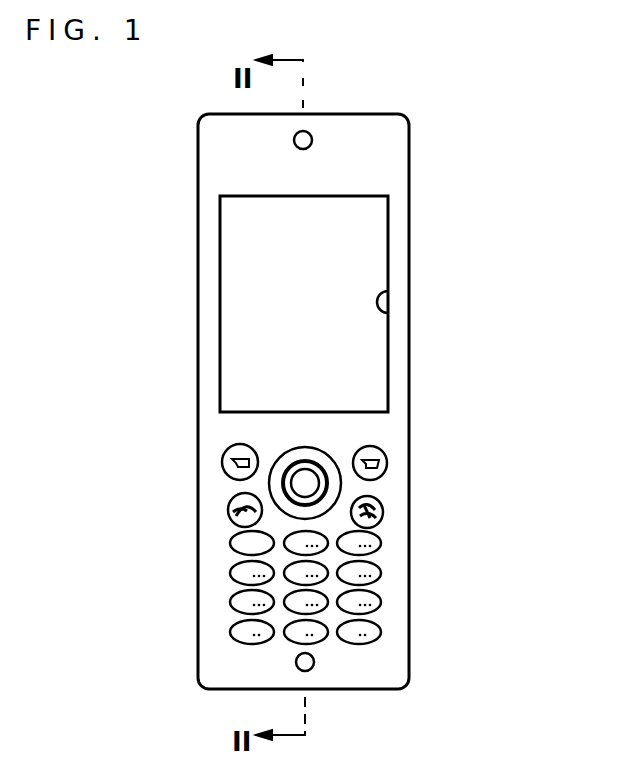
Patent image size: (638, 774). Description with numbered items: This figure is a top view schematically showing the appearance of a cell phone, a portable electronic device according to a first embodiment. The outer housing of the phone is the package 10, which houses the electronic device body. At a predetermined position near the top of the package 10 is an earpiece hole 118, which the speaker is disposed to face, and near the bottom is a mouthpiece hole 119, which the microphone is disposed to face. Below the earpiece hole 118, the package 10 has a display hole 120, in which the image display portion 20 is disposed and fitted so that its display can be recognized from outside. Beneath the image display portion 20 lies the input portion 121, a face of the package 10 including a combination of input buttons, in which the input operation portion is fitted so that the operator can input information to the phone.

The package 10 is at (409, 437).
The image display portion 20 is at (248, 316).
The earpiece hole 118 is at (311, 136).
The mouthpiece hole 119 is at (312, 668).
The display hole 120 is at (388, 290).
The input portion 121 is at (216, 566).